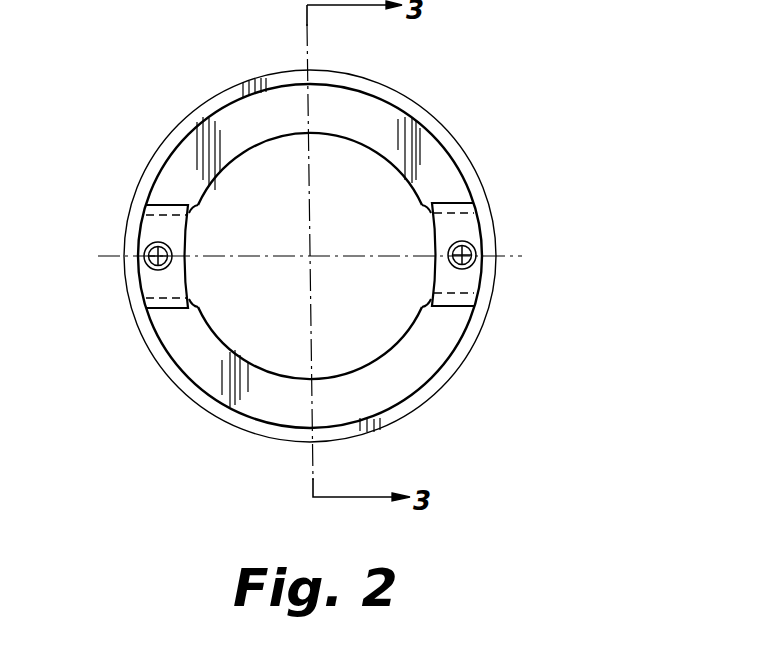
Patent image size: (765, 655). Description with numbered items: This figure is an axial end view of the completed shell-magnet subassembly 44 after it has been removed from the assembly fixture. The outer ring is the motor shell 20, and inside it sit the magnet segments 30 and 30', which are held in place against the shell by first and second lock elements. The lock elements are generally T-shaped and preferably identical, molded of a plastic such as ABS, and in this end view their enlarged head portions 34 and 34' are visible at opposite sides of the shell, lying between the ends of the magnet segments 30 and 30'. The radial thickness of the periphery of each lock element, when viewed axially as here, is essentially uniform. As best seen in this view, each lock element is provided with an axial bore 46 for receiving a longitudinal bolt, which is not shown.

The motor shell 20 is at (403, 95).
The magnet segment 30 is at (360, 153).
The magnet segment 30' is at (370, 353).
The head portion 34 is at (117, 246).
The head portion 34' is at (502, 241).
The shell-magnet subassembly 44 is at (377, 247).
The axial bore 46 is at (150, 263).